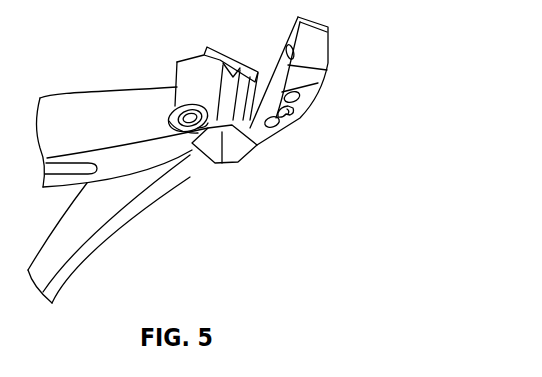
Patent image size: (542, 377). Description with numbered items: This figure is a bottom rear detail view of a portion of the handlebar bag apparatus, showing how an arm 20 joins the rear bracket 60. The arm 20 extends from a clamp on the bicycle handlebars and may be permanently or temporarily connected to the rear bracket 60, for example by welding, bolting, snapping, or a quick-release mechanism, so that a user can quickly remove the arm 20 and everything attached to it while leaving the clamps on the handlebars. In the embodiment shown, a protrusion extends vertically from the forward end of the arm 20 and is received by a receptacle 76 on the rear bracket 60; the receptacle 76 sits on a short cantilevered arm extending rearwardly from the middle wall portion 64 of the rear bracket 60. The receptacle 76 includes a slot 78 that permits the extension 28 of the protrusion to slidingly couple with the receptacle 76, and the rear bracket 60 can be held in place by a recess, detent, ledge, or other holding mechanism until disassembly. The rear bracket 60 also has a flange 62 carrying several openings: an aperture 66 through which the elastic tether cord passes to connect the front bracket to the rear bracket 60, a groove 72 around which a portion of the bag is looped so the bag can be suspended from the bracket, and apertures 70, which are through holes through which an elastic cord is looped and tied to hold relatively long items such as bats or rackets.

The arm 20 is at (109, 140).
The extension 28 is at (205, 126).
The rear bracket 60 is at (133, 215).
The flange 62 is at (328, 50).
The middle wall portion 64 is at (92, 248).
The aperture 66 is at (288, 48).
The aperture 70 is at (302, 99).
The groove 72 is at (293, 114).
The receptacle 76 is at (206, 97).
The slot 78 is at (233, 163).